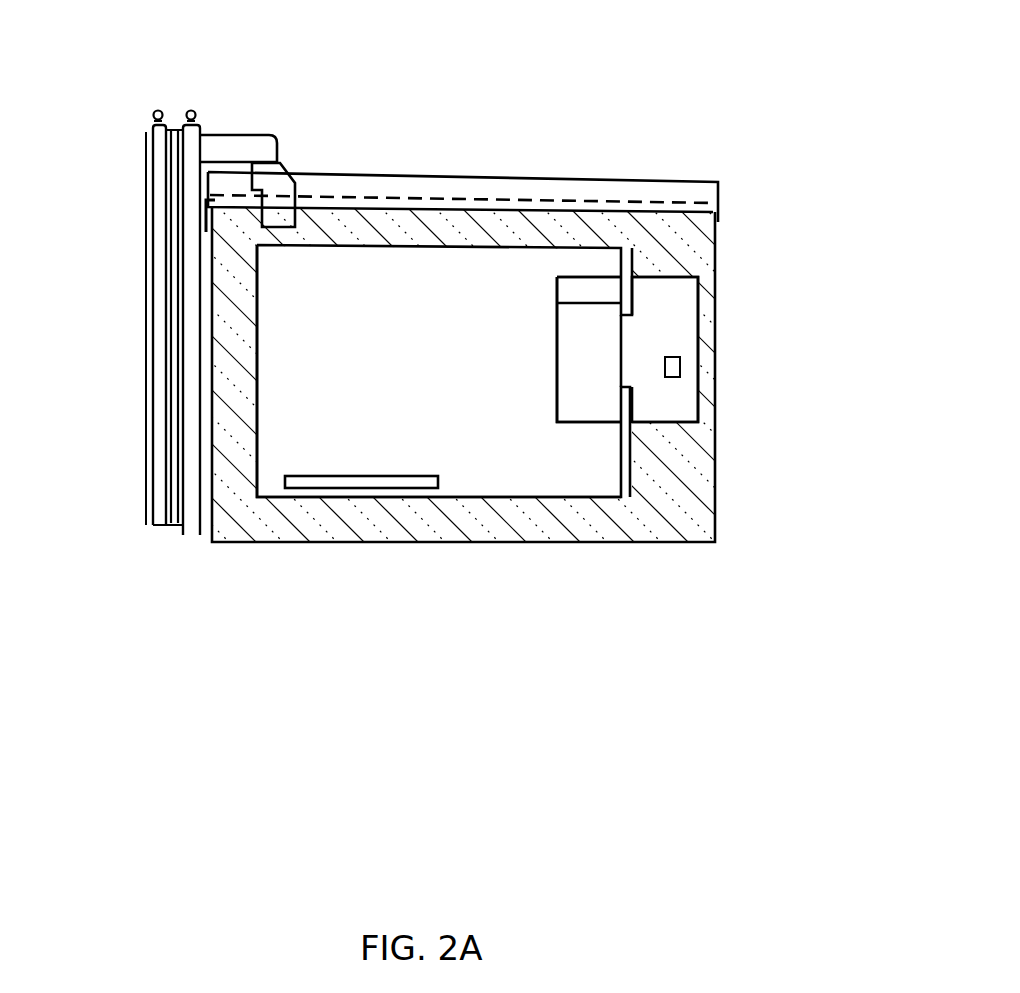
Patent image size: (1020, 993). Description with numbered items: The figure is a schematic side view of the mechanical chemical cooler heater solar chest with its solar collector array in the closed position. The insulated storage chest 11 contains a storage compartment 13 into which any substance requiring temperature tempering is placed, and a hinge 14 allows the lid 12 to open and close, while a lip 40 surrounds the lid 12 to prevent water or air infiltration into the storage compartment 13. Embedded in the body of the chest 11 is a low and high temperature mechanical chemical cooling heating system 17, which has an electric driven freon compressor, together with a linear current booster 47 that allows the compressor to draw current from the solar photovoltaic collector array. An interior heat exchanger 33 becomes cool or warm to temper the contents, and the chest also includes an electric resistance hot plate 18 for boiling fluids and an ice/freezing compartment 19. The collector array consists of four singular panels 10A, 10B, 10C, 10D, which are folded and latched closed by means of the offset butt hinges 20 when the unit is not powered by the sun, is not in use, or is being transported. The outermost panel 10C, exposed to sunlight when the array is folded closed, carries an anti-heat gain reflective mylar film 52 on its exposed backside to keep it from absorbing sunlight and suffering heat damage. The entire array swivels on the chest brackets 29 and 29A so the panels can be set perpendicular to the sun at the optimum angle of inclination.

The singular panel 10A is at (166, 527).
The singular panel 10B is at (178, 532).
The singular panel 10C is at (148, 528).
The singular panel 10D is at (196, 533).
The storage chest 11 is at (658, 467).
The lid 12 is at (445, 176).
The storage compartment 13 is at (535, 440).
The hinge 14 is at (200, 215).
The mechanical chemical cooling heating system 17 is at (665, 338).
The electric resistance hot plate 18 is at (388, 470).
The ice/freezing compartment 19 is at (578, 290).
The offset butt hinges 20 is at (150, 116).
The chest bracket 29 is at (255, 147).
The chest bracket 29A is at (278, 165).
The interior heat exchanger 33 is at (582, 352).
The lip 40 is at (722, 202).
The linear current booster 47 is at (682, 365).
The anti-heat gain reflective mylar film 52 is at (145, 493).